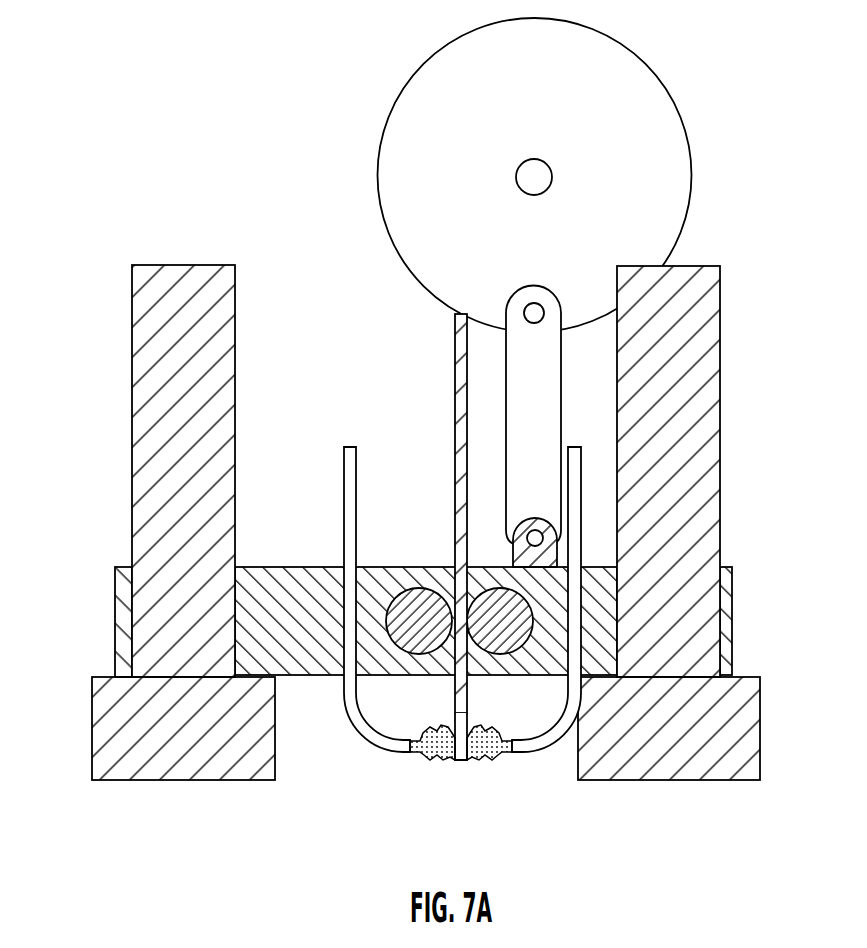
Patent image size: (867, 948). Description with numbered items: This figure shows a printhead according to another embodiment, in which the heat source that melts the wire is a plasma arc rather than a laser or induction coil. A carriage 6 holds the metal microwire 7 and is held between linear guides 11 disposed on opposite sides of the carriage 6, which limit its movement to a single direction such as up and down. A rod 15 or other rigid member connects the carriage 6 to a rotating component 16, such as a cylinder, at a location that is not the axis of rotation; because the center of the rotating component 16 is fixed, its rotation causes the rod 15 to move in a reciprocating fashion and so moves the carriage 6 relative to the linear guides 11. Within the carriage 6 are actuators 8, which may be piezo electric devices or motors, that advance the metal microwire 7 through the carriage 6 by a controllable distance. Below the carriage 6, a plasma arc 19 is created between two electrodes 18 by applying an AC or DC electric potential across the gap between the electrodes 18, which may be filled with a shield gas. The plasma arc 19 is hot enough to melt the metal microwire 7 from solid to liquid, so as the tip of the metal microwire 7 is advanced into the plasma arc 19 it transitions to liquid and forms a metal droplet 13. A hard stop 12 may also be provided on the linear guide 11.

The carriage 6 is at (605, 621).
The metal microwire 7 is at (463, 425).
The actuators 8 is at (517, 615).
The linear guides 11 is at (176, 509).
The hard stop 12 is at (115, 675).
The metal droplet 13 is at (463, 757).
The rod 15 is at (517, 355).
The rotating component 16 is at (468, 271).
The electrodes 18 is at (565, 472).
The plasma arc 19 is at (430, 757).